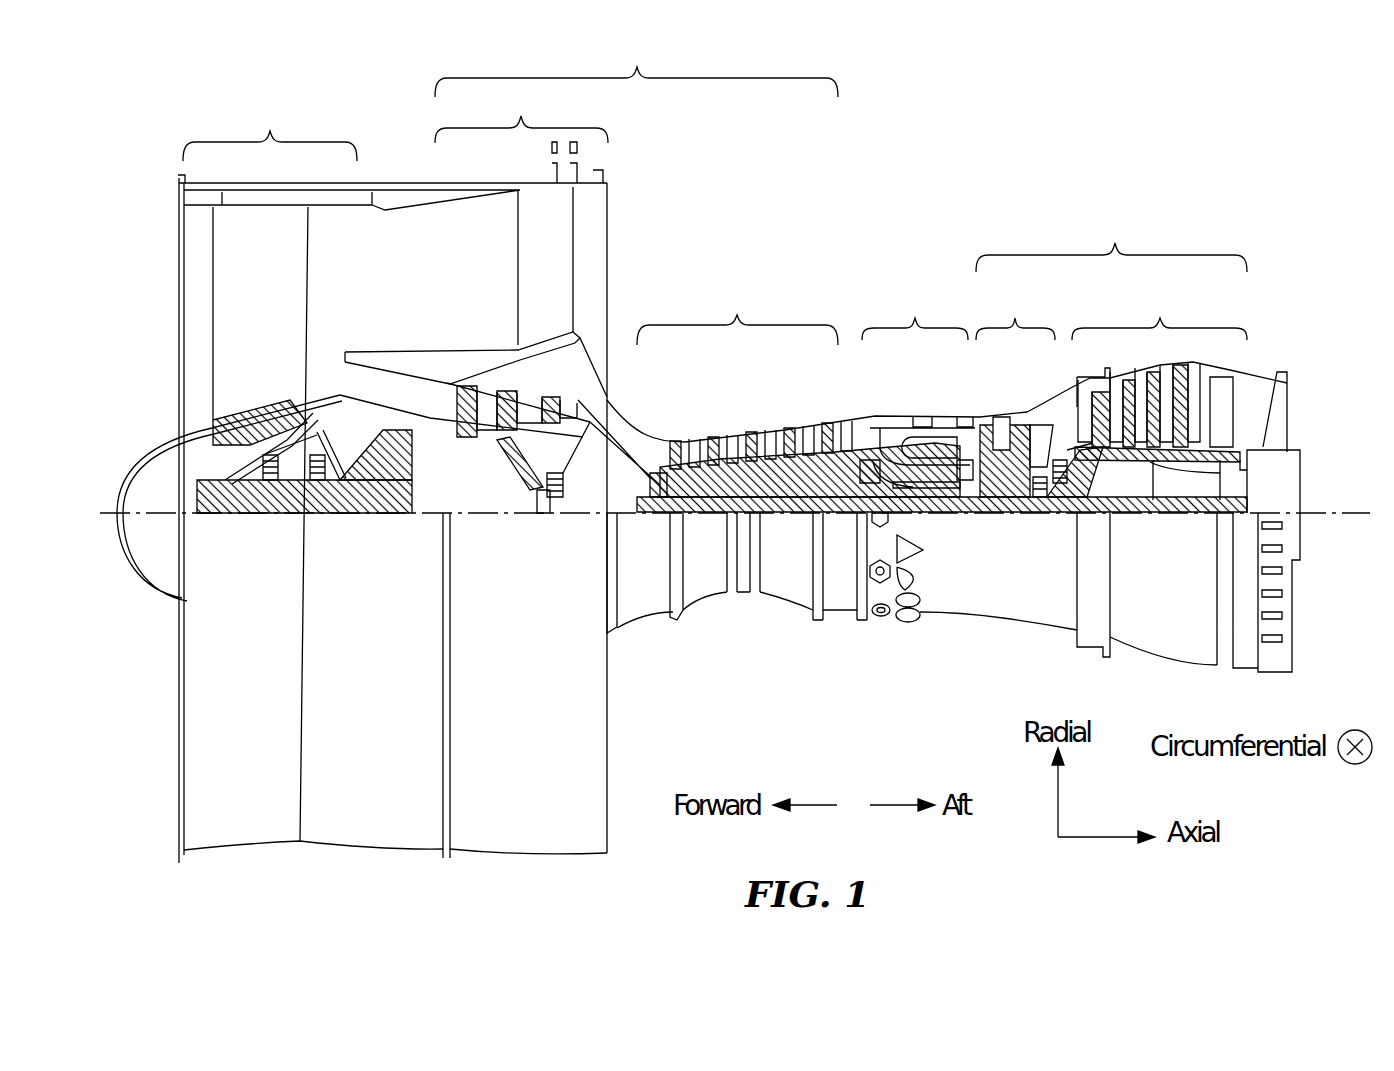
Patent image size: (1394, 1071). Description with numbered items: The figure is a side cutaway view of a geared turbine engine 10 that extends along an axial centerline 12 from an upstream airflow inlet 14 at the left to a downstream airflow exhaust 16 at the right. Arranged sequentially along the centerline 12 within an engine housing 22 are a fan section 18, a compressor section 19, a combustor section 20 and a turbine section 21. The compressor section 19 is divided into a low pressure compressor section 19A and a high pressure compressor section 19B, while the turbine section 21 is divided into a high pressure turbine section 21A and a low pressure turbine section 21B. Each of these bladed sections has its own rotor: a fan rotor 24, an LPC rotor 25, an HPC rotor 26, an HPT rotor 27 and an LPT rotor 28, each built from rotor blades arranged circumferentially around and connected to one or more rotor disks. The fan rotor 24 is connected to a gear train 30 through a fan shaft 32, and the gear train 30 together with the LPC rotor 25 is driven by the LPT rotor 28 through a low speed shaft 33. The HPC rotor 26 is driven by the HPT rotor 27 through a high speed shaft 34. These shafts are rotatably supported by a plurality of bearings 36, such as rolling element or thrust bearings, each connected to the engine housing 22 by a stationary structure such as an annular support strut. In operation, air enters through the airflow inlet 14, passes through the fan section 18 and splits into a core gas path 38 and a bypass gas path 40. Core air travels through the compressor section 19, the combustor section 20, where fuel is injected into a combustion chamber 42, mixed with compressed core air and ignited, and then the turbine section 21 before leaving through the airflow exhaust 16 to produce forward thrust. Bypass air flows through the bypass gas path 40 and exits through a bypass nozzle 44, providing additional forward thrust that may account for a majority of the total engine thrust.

The geared turbine engine 10 is at (150, 165).
The axial centerline 12 is at (1349, 530).
The upstream airflow inlet 14 is at (178, 262).
The downstream airflow exhaust 16 is at (1290, 395).
The fan section 18 is at (270, 129).
The compressor section 19 is at (636, 66).
The low pressure compressor (LPC) section 19A is at (521, 259).
The high pressure compressor (HPC) section 19B is at (798, 390).
The combustor section 20 is at (915, 313).
The turbine section 21 is at (1111, 239).
The high pressure turbine (HPT) section 21A is at (1039, 392).
The low pressure turbine (LPT) section 21B is at (1159, 374).
The engine housing 22 is at (626, 634).
The fan rotor 24 is at (205, 430).
The LPC rotor 25 is at (514, 460).
The HPC rotor 26 is at (792, 485).
The HPT rotor 27 is at (1007, 513).
The LPT rotor 28 is at (1155, 467).
The gear train 30 is at (396, 514).
The fan shaft 32 is at (262, 520).
The low speed shaft 33 is at (840, 600).
The high speed shaft 34 is at (937, 513).
The bearings 36 is at (287, 513).
The core gas path/duct 38 is at (628, 432).
The bypass gas path/duct 40 is at (448, 278).
The combustion chamber 42 is at (930, 440).
The bypass nozzle 44 is at (607, 237).